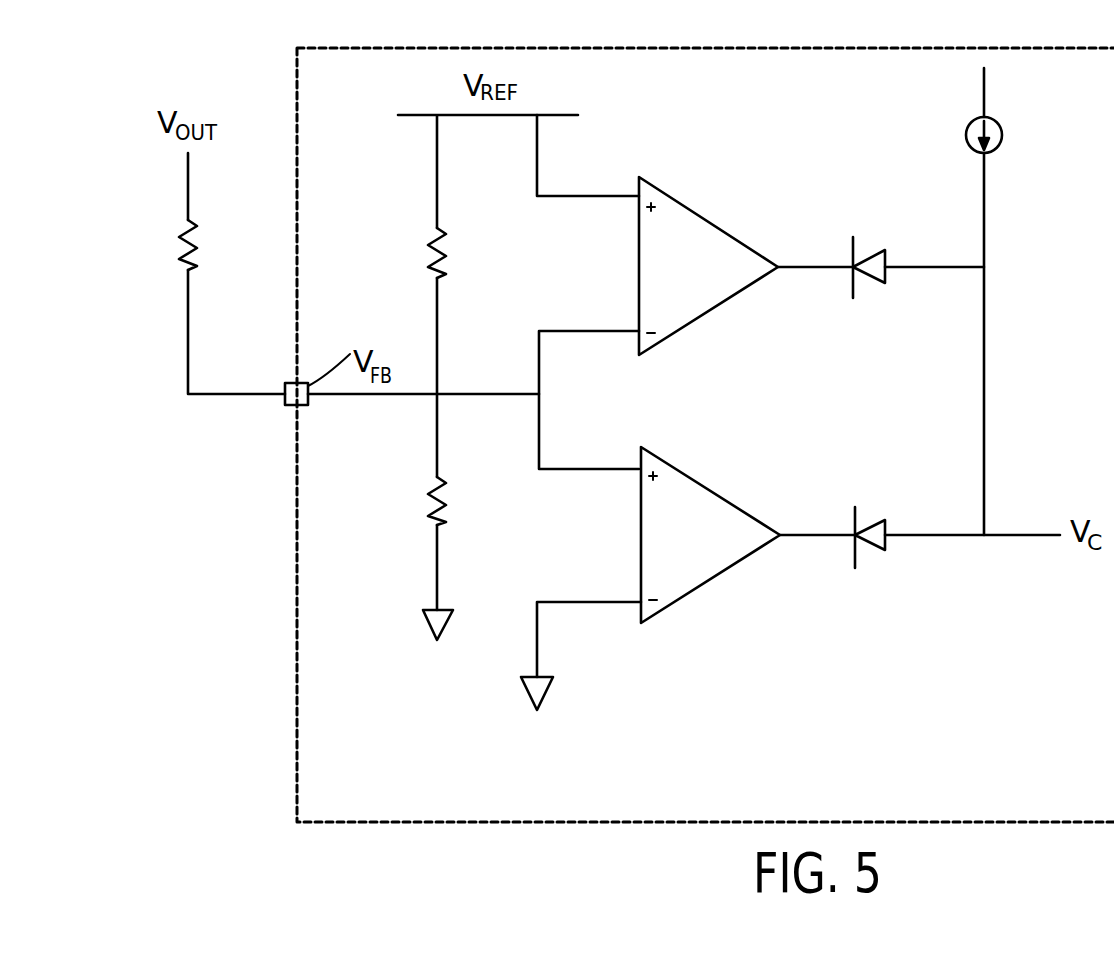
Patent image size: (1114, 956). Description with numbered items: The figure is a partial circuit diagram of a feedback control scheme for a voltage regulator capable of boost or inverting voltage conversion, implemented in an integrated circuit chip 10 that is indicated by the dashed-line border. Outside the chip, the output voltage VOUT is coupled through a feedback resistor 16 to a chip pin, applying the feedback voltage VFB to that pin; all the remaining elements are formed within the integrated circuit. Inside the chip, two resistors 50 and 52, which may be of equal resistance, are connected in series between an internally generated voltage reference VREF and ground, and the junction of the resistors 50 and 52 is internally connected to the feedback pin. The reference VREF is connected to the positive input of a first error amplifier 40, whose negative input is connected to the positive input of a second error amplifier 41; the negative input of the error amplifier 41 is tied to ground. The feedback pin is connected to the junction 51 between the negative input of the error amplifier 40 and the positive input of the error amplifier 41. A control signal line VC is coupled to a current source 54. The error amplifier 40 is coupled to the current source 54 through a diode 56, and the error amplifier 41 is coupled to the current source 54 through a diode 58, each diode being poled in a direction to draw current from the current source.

The integrated circuit chip 10 is at (409, 777).
The feedback resistor 16 is at (182, 252).
The error amplifier 40 is at (720, 228).
The error amplifier 41 is at (697, 482).
The resistor 50 is at (432, 258).
The junction 51 is at (545, 394).
The resistor 52 is at (432, 506).
The current source 54 is at (999, 122).
The diode 56 is at (868, 276).
The diode 58 is at (868, 543).